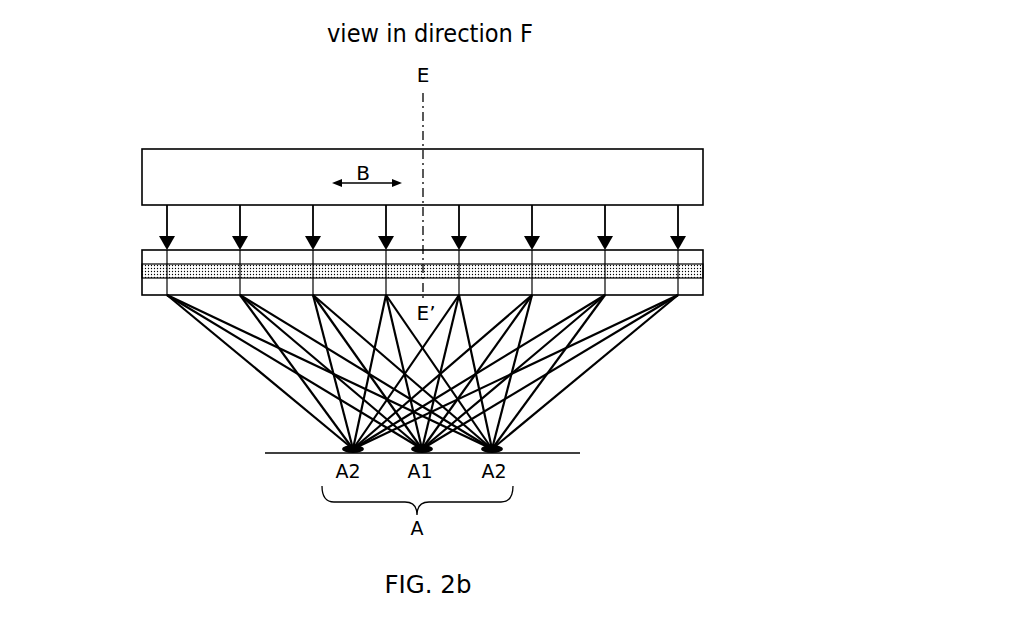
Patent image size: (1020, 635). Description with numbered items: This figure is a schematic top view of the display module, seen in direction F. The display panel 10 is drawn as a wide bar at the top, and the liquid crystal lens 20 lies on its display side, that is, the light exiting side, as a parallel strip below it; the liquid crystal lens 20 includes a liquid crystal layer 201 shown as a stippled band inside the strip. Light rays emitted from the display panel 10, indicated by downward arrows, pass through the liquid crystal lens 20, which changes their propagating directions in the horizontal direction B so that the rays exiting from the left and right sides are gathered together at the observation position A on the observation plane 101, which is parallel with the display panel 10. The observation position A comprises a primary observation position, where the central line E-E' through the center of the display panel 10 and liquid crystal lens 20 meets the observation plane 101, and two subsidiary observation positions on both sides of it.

The display panel 10 is at (680, 183).
The liquid crystal lens 20 is at (417, 272).
The liquid crystal layer 201 is at (162, 274).
The observation plane 101 is at (580, 453).